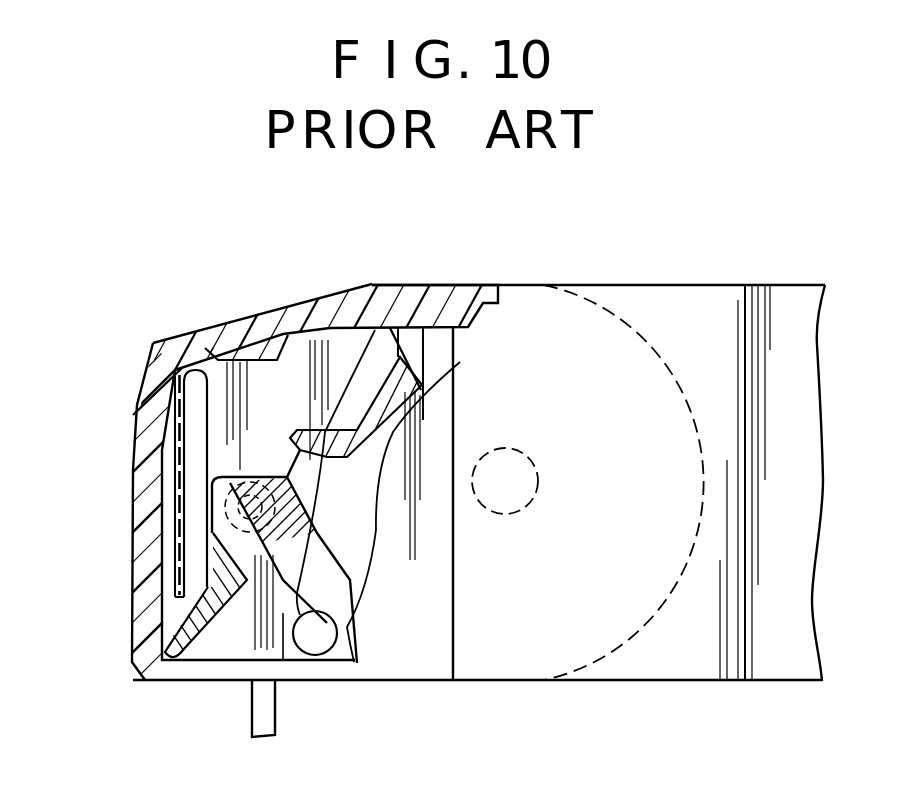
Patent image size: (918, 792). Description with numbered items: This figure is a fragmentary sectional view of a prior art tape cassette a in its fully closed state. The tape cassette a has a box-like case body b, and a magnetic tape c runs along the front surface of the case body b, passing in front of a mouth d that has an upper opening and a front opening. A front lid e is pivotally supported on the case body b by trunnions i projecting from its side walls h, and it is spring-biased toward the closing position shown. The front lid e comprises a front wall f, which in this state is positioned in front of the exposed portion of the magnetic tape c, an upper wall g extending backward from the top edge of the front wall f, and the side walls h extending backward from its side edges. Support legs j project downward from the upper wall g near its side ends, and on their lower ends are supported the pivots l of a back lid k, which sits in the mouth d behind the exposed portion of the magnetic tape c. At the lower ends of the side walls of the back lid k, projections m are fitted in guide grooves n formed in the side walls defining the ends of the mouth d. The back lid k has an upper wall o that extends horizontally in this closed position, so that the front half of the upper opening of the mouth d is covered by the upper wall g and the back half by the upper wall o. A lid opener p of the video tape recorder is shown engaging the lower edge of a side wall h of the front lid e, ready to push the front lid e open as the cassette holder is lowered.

The tape cassette a is at (135, 258).
The case body b is at (688, 285).
The magnetic tape c is at (178, 477).
The mouth d is at (410, 633).
The front lid e is at (53, 278).
The front wall f is at (130, 428).
The upper wall g is at (180, 337).
The side wall h is at (170, 405).
The trunnion i is at (536, 490).
The support leg j is at (217, 468).
The back lid k is at (285, 523).
The pivot l is at (263, 475).
The projection m is at (285, 605).
The guide groove n is at (380, 468).
The upper wall o is at (440, 285).
The lid opener p is at (262, 705).